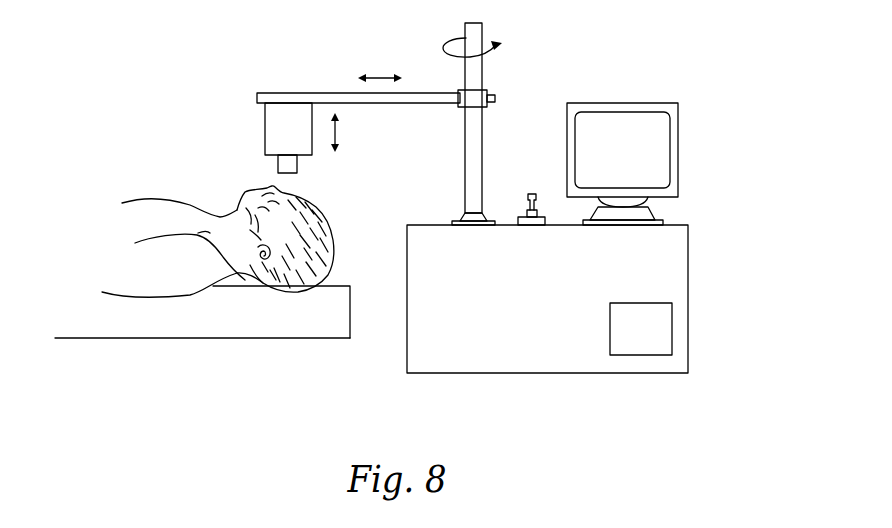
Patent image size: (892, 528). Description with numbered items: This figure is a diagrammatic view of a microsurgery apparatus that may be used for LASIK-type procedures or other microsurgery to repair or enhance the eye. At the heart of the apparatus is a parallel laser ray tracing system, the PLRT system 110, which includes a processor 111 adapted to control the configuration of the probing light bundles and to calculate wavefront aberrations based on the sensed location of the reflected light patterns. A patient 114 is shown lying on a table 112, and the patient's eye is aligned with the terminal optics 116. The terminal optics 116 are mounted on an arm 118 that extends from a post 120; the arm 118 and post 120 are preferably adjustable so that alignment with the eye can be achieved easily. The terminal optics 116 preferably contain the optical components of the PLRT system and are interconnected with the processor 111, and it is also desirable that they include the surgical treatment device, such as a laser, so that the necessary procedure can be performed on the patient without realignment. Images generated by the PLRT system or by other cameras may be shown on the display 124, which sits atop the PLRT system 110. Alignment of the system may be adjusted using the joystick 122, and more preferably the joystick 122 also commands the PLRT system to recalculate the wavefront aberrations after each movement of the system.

The parallel laser ray tracing (PLRT) system 110 is at (688, 249).
The processor 111 is at (672, 330).
The table 112 is at (303, 320).
The patient 114 is at (255, 294).
The terminal optics 116 is at (263, 128).
The arm 118 is at (327, 92).
The post 120 is at (463, 173).
The joystick 122 is at (540, 188).
The display 124 is at (678, 122).